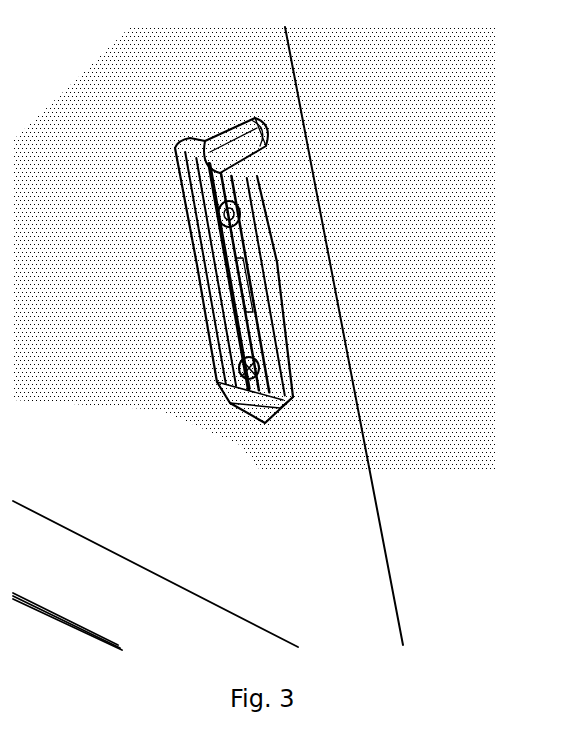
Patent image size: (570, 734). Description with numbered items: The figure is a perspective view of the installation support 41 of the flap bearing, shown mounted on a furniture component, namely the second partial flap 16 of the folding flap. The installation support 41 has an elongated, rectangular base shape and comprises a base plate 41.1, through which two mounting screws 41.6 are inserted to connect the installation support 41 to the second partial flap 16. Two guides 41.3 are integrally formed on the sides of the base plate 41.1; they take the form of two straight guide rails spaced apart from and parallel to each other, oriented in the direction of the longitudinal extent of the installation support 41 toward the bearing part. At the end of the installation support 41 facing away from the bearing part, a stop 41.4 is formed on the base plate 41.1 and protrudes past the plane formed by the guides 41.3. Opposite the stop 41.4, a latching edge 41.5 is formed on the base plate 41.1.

The second partial flap 16 is at (365, 548).
The installation support 41 is at (420, 255).
The base plate 41.1 is at (282, 311).
The guides 41.3 is at (265, 242).
The stop 41.4 is at (258, 132).
The latching edge 41.5 is at (272, 398).
The mounting screws 41.6 is at (240, 212).